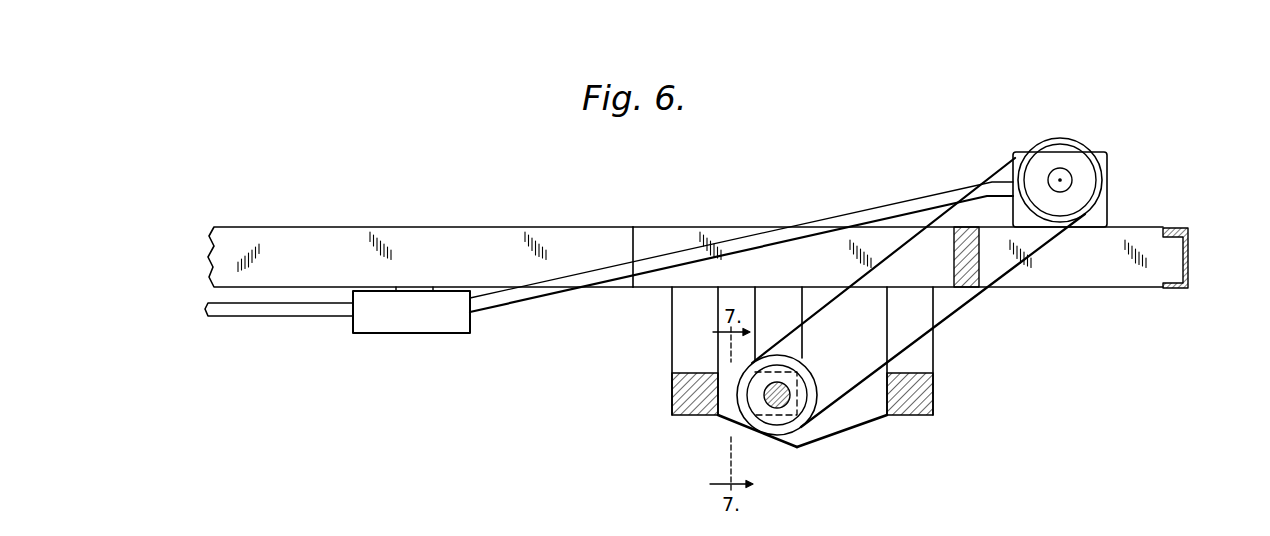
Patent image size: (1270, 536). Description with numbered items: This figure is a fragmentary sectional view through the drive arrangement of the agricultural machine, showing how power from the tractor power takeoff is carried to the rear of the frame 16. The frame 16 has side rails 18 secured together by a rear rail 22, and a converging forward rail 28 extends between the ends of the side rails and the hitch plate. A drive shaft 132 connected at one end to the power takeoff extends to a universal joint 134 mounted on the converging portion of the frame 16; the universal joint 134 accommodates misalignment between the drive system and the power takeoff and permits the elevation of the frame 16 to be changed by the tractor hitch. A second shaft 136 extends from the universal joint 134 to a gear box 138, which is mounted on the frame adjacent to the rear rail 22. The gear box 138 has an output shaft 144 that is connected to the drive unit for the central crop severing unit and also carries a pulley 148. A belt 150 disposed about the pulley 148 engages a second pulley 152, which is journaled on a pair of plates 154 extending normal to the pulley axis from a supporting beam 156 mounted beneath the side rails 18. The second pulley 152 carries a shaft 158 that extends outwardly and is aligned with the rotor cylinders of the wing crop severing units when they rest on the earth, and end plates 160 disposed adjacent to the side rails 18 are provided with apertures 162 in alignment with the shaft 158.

The frame 16 is at (502, 227).
The side rail 18 is at (851, 243).
The rear rail 22 is at (1188, 257).
The converging forward rail 28 is at (396, 227).
The drive shaft 132 is at (250, 318).
The universal joint 134 is at (370, 326).
The second shaft 136 is at (803, 225).
The gear box 138 is at (1023, 152).
The output shaft 144 is at (1062, 180).
The pulley 148 is at (1070, 162).
The belt 150 is at (941, 213).
The second pulley 152 is at (785, 423).
The plates 154 is at (728, 408).
The supporting beam 156 is at (672, 398).
The shaft 158 is at (791, 387).
The end plates 160 is at (862, 420).
The apertures 162 is at (763, 289).